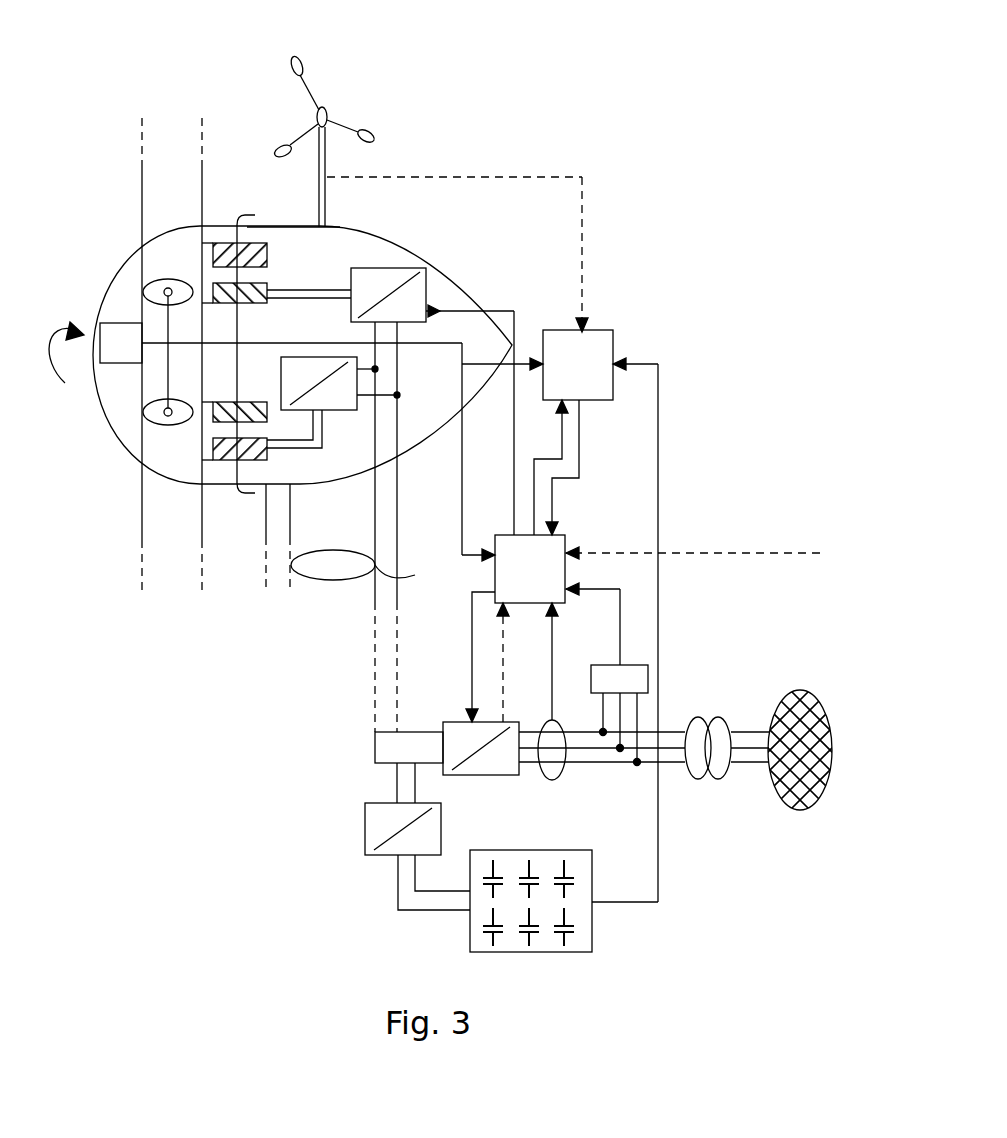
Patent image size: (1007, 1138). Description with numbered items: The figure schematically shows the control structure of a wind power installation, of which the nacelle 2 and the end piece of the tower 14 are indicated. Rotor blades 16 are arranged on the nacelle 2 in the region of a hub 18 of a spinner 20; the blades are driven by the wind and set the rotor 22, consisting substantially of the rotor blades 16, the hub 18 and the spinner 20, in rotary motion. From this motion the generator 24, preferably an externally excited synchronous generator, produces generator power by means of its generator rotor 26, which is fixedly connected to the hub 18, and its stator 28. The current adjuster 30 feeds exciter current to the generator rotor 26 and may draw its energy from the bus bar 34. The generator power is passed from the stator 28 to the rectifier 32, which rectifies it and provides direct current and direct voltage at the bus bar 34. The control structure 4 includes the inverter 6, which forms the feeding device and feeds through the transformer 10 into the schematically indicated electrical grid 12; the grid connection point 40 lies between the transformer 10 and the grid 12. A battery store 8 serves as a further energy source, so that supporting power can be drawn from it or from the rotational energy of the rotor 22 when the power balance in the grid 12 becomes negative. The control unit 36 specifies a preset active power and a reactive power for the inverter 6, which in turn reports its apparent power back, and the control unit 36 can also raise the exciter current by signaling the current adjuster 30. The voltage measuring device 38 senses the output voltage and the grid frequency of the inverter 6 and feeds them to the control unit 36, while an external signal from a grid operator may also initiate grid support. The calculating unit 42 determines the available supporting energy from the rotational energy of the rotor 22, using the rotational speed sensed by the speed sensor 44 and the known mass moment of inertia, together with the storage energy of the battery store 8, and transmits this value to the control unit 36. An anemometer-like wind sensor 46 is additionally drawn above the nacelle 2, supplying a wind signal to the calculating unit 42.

The nacelle 2 is at (232, 145).
The control structure 4 is at (718, 310).
The inverter 6 is at (500, 776).
The battery store 8 is at (590, 940).
The transformer 10 is at (718, 705).
The electrical grid 12 is at (800, 690).
The tower 14 is at (300, 543).
The rotor blades 16 is at (158, 202).
The hub 18 is at (150, 383).
The spinner 20 is at (113, 428).
The rotor 22 is at (155, 608).
The generator 24 is at (237, 530).
The generator rotor 26 is at (267, 303).
The stator 28 is at (267, 262).
The current adjuster 30 is at (398, 262).
The rectifier 32 is at (330, 412).
The bus bar 34 is at (385, 435).
The control unit 36 is at (495, 572).
The voltage measuring device 38 is at (648, 668).
The grid connection point 40 is at (755, 775).
The calculating unit 42 is at (595, 332).
The speed sensor 44 is at (118, 322).
The anemometer 46 is at (367, 100).